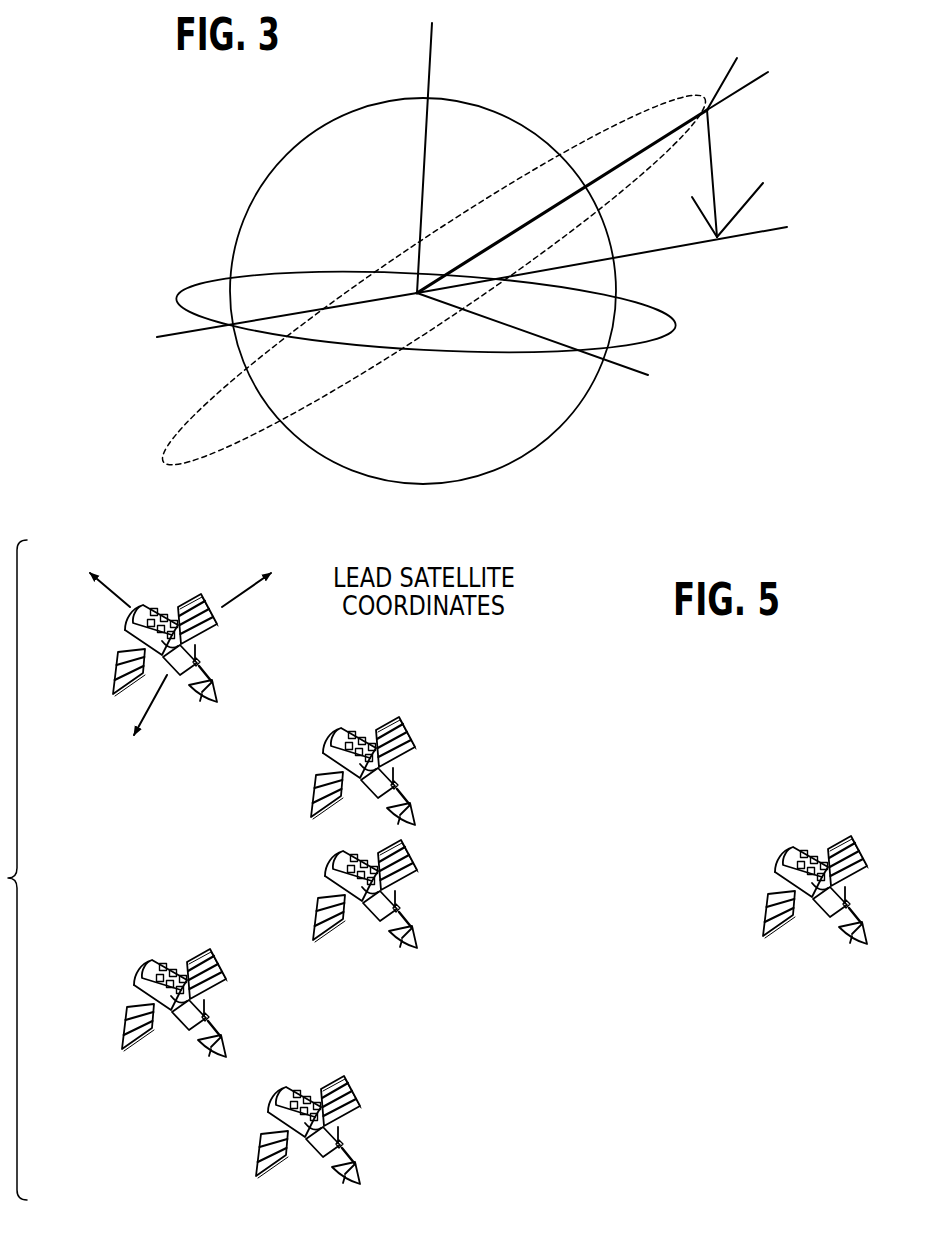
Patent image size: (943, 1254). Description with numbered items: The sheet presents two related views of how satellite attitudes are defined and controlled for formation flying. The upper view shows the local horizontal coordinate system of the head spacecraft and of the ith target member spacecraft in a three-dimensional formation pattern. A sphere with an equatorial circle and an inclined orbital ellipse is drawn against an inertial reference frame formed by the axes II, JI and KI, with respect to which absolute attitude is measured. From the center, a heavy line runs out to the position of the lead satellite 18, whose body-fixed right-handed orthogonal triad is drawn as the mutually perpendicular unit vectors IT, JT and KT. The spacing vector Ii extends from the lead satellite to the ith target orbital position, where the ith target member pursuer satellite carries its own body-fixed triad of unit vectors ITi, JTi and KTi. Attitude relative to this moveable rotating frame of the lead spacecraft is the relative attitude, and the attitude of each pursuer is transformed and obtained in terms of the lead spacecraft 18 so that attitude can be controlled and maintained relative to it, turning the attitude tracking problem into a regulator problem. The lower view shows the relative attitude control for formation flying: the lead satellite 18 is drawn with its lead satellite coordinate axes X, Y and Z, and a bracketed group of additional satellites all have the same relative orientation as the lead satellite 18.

In FIG. 5, the lead satellite 18 is at (148, 616).
In FIG. 5, the X coordinate axis X is at (98, 581).
In FIG. 5, the Y coordinate axis Y is at (144, 725).
In FIG. 5, the Z coordinate axis Z is at (257, 585).
In FIG. 3, the inertial frame K axis KI is at (378, 53).
In FIG. 3, the inertial frame I axis II is at (161, 386).
In FIG. 3, the inertial frame J axis JI is at (634, 421).
In FIG. 3, the lead spacecraft I axis IT is at (784, 88).
In FIG. 3, the lead spacecraft J axis JT is at (740, 50).
In FIG. 3, the lead spacecraft K axis KT is at (645, 81).
In FIG. 3, the spacing vector Ii is at (724, 166).
In FIG. 3, the ith target member spacecraft I axis ITi is at (801, 268).
In FIG. 3, the ith target member spacecraft J axis JTi is at (789, 196).
In FIG. 3, the ith target member spacecraft K axis KTi is at (672, 210).